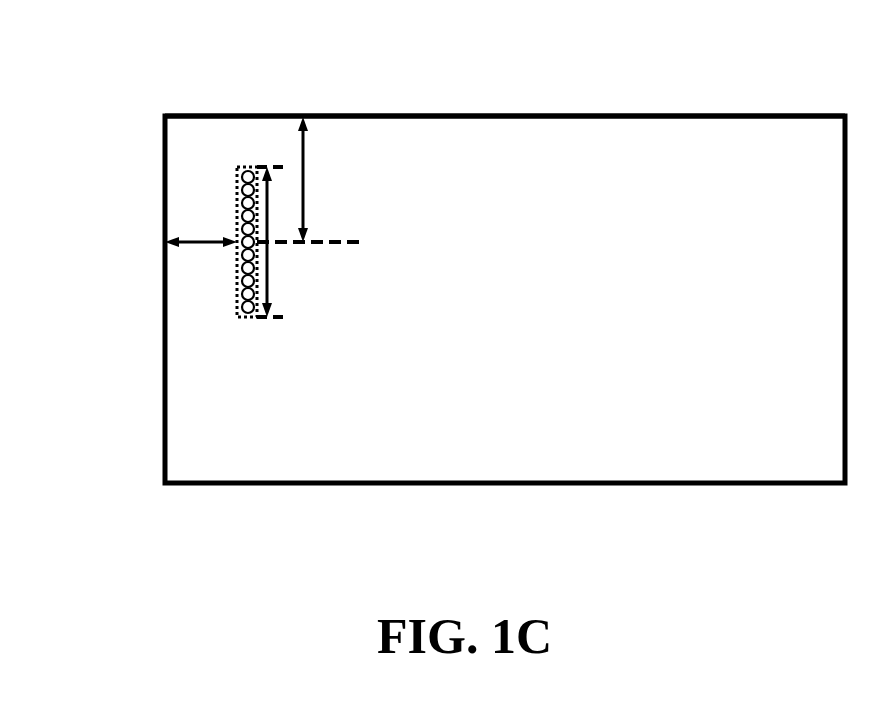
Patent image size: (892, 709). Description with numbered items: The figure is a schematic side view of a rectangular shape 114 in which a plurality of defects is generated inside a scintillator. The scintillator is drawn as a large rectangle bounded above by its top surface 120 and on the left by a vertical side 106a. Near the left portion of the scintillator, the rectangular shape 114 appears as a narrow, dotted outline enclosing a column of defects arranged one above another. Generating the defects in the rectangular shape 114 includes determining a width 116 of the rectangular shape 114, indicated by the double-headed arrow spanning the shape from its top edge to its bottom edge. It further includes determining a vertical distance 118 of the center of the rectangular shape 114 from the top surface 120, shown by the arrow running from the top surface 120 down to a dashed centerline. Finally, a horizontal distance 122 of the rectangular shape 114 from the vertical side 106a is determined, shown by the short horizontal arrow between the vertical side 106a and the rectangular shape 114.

The vertical side 106a is at (165, 349).
The top surface 120 is at (378, 116).
The rectangular shape 114 is at (240, 307).
The width 116 is at (267, 267).
The vertical distance 118 is at (310, 179).
The horizontal distance 122 is at (201, 222).